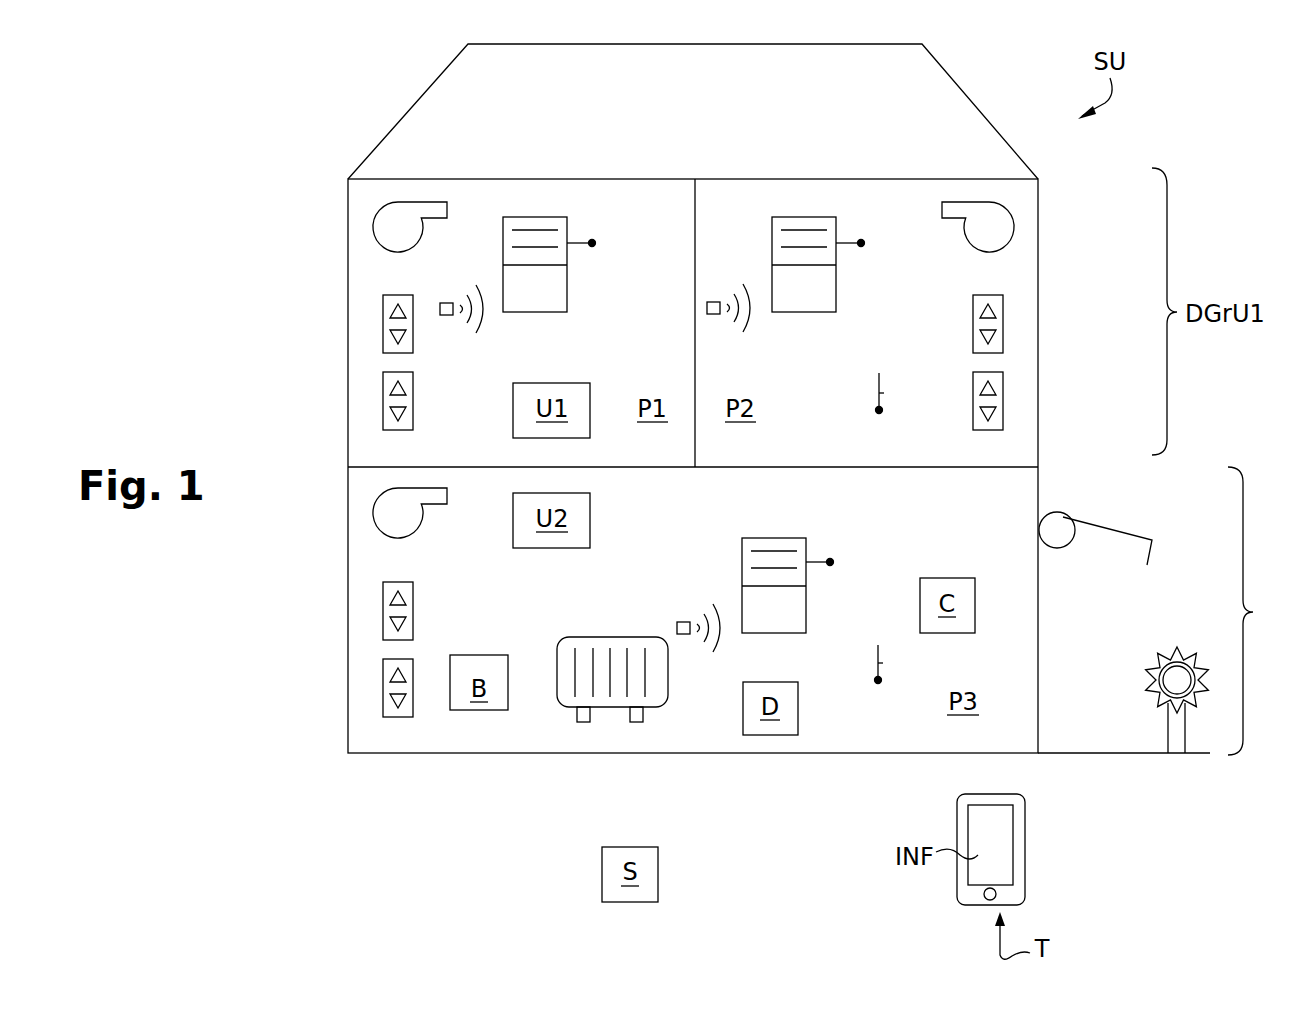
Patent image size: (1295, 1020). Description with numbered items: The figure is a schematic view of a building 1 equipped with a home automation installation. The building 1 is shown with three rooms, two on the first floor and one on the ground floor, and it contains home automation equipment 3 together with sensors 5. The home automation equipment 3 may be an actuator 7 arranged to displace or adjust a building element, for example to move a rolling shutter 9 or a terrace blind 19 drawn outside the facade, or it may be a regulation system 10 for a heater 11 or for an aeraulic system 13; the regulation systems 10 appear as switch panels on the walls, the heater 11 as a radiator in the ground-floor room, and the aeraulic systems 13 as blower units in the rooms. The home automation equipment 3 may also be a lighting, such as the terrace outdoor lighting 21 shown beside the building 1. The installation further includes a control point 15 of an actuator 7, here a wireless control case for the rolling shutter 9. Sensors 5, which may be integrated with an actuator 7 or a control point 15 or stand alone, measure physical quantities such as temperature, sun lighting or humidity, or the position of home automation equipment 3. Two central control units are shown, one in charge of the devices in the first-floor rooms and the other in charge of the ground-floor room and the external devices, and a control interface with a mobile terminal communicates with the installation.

The building 1 is at (980, 108).
The home automation equipment 3 is at (730, 477).
The sensor 5 is at (447, 303).
The actuator 7 is at (699, 462).
The rolling shutter 9 is at (535, 217).
The regulation system 10 is at (383, 395).
The heater 11 is at (612, 640).
The aeraulic system 13 is at (384, 230).
The control point 15 is at (477, 655).
The terrace blind 19 is at (1123, 533).
The terrace outdoor lighting 21 is at (1168, 730).